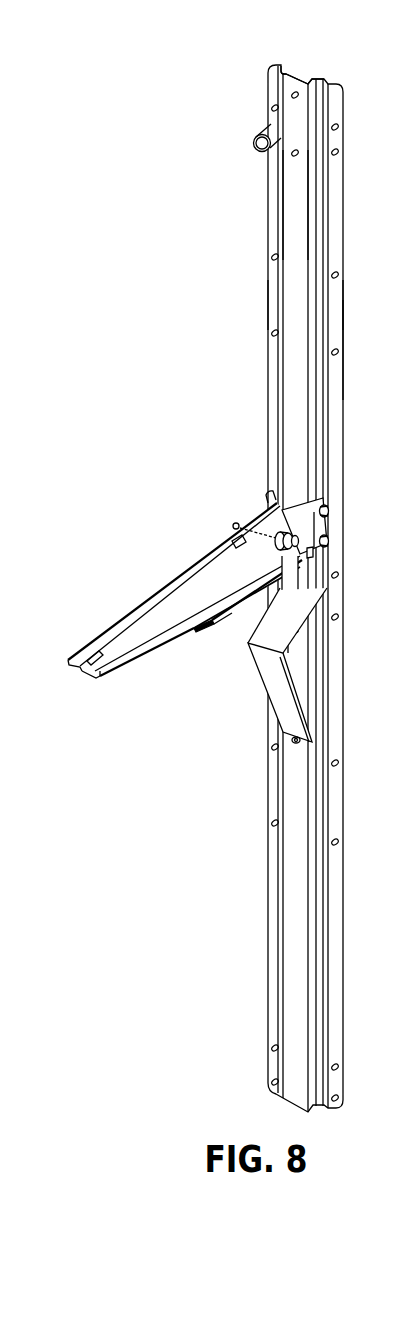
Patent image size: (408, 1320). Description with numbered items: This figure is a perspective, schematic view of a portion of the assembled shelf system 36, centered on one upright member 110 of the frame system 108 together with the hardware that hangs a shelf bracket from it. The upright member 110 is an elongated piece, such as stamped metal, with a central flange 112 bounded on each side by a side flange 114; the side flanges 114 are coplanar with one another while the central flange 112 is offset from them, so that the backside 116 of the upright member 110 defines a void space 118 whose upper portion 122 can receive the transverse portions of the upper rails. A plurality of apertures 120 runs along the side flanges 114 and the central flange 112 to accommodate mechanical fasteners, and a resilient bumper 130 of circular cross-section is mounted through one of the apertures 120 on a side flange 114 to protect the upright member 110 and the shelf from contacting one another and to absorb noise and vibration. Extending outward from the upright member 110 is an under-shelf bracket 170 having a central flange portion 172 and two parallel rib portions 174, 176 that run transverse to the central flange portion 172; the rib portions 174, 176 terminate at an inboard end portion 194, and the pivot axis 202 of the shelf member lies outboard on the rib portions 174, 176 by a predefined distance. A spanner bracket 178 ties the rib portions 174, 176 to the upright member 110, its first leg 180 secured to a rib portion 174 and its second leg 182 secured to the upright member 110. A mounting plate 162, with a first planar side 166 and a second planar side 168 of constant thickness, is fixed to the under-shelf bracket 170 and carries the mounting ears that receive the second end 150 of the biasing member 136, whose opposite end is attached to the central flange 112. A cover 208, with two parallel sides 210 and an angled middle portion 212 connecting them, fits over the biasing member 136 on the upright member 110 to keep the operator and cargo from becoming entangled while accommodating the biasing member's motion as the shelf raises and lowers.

The shelf system 36 is at (375, 205).
The frame system 108 is at (358, 89).
The upright member 110 is at (338, 190).
The central flange 112 is at (300, 220).
The side flanges 114 is at (272, 300).
The backside 116 is at (283, 67).
The void space 118 is at (311, 67).
The apertures 120 is at (339, 152).
The upper portion 122 is at (255, 117).
The bumpers 130 is at (257, 140).
The biasing member 136 is at (300, 607).
The second end 150 is at (221, 598).
The mounting plate 162 is at (200, 633).
The first planar side 166 is at (209, 614).
The second planar side 168 is at (232, 612).
The under-shelf bracket 170 is at (85, 670).
The central flange portion 172 is at (115, 637).
The rib portion 174 is at (67, 662).
The rib portion 176 is at (110, 670).
The spanner bracket 178 is at (328, 528).
The first leg 180 is at (341, 492).
The second leg 182 is at (321, 555).
The inboard end portion 194 is at (168, 592).
The pivot axis 202 is at (232, 526).
The cover 208 is at (297, 679).
The sides 210 is at (266, 642).
The middle portion 212 is at (287, 708).